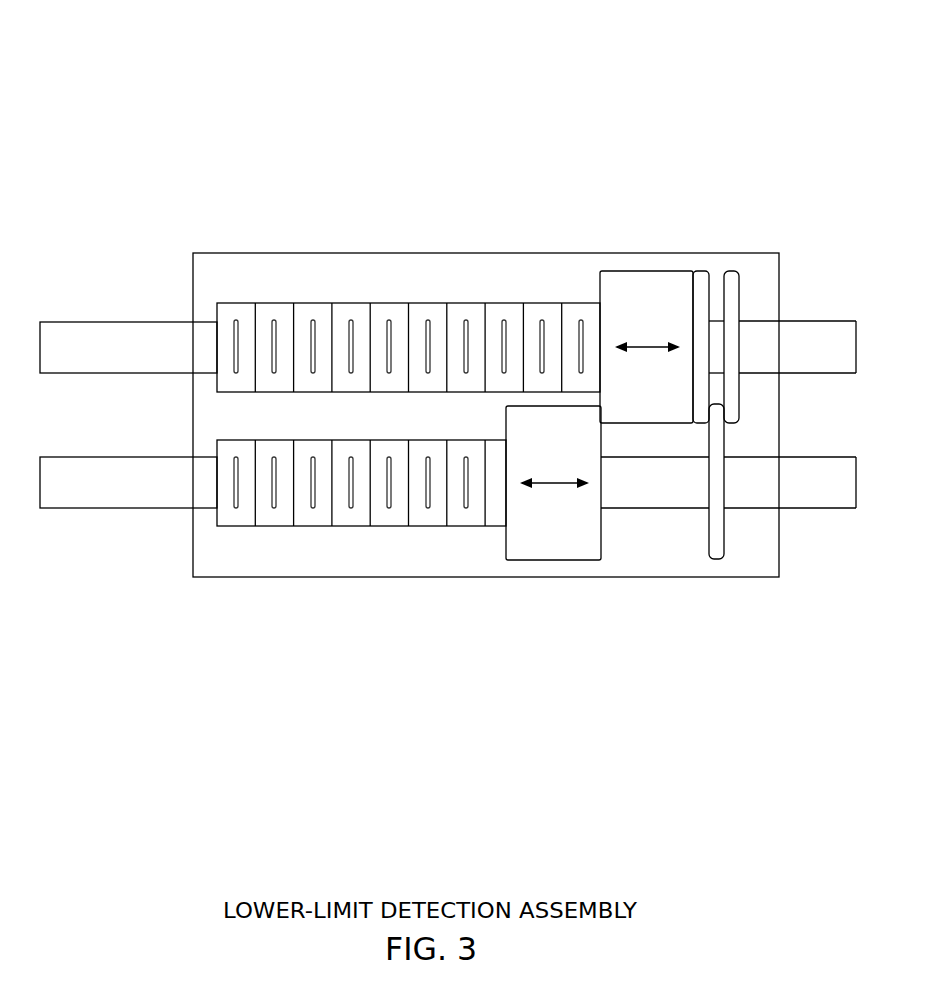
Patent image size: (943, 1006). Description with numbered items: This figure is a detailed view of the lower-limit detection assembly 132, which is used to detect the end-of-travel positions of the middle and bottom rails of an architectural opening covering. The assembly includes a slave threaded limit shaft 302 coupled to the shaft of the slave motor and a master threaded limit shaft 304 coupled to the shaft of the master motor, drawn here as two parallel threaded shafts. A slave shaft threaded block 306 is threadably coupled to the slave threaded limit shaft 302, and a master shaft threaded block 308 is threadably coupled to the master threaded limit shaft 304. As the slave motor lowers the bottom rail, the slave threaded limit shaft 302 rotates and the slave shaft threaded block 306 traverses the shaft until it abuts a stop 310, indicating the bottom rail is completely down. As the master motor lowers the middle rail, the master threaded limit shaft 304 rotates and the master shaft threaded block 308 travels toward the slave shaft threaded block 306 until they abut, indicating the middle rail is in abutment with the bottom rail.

The lower-limit detection assembly 132 is at (124, 74).
The slave threaded limit shaft 302 is at (423, 305).
The master threaded limit shaft 304 is at (295, 526).
The slave shaft threaded block 306 is at (648, 272).
The master shaft threaded block 308 is at (570, 560).
The stop 310 is at (702, 272).